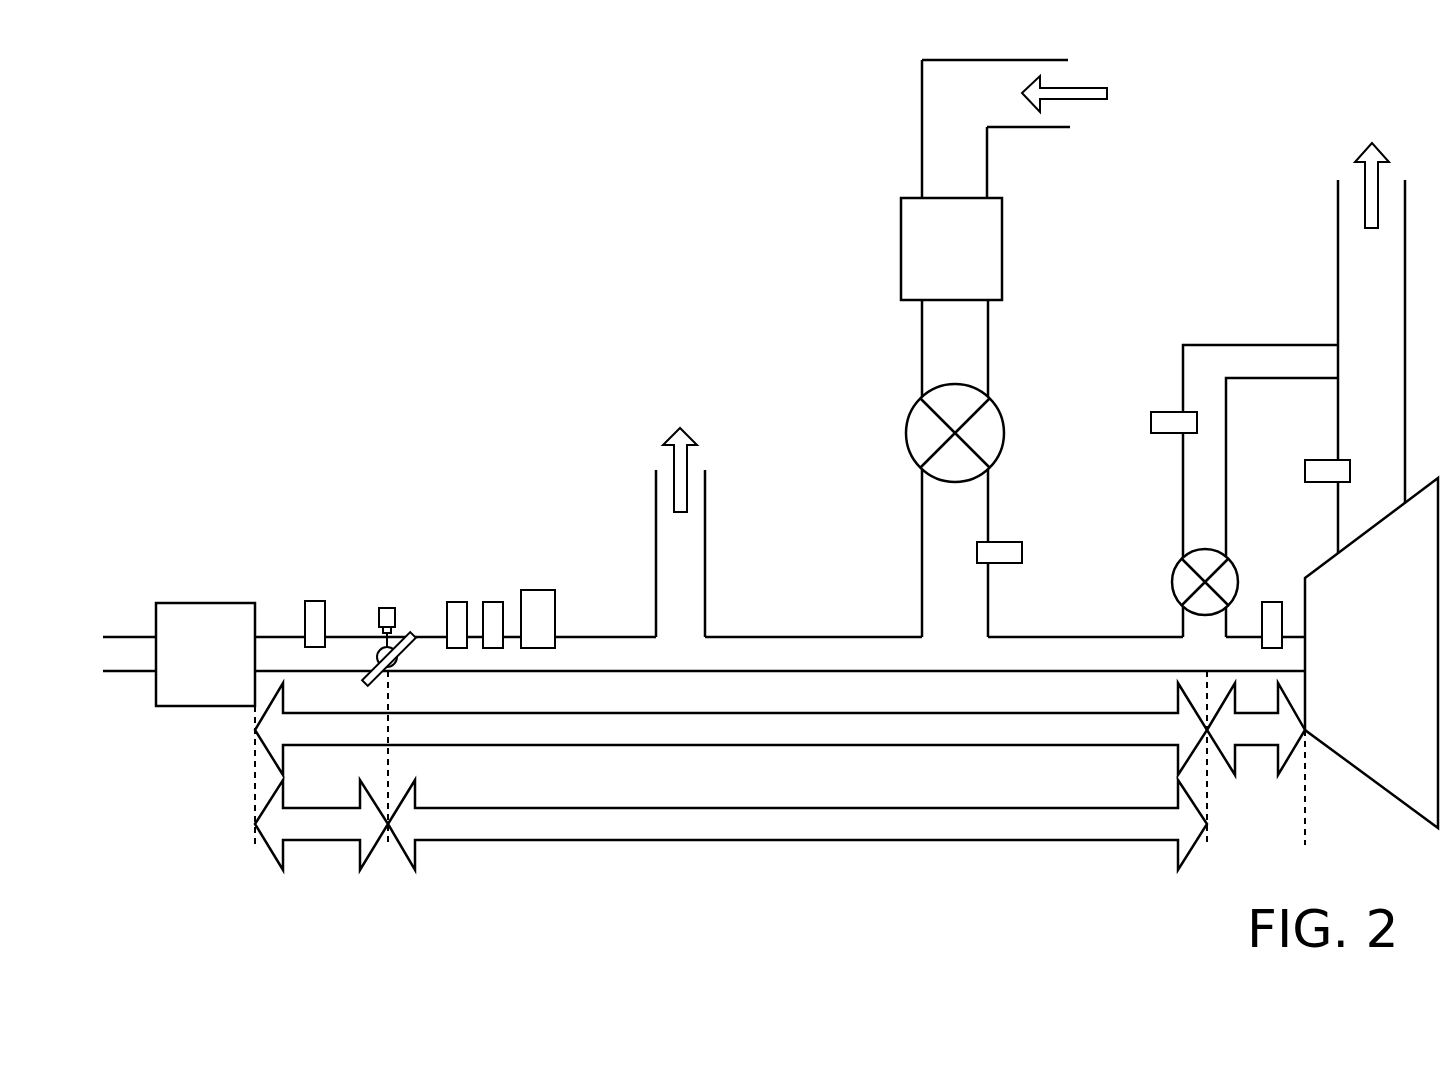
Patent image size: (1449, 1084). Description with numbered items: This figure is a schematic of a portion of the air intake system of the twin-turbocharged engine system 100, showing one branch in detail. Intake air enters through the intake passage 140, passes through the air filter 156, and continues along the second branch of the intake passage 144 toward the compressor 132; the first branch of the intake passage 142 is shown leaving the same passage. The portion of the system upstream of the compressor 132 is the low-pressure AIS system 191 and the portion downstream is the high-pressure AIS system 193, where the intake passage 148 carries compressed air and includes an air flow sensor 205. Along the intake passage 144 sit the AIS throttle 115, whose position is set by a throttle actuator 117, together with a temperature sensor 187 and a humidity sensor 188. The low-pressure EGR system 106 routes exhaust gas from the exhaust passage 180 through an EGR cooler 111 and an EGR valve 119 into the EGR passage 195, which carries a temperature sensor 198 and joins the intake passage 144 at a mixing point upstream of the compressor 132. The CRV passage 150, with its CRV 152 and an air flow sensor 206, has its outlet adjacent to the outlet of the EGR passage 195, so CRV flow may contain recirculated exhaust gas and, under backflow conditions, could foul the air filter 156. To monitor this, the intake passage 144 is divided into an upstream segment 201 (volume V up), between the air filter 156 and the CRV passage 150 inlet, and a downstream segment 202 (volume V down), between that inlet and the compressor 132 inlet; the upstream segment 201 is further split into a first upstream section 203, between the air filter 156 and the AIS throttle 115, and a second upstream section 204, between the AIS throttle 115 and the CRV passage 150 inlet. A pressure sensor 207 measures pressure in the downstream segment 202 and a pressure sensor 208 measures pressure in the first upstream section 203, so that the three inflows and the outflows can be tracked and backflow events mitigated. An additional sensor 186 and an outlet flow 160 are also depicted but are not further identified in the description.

The engine system 100 is at (484, 280).
The low-pressure EGR system 106 is at (790, 253).
The EGR cooler 111 is at (968, 262).
The AIS throttle 115 is at (422, 624).
The throttle actuator 117 is at (380, 608).
The EGR valve 119 is at (920, 410).
The compressor 132 is at (1389, 662).
The intake passage 140 is at (142, 666).
The first branch of intake passage 142 is at (680, 520).
The second branch of intake passage 144 is at (765, 667).
The intake passage 148 is at (1389, 384).
The CRV passage 150 is at (1224, 497).
The CRV 152 is at (1177, 575).
The air filter 156 is at (221, 666).
The exhaust outlet 160 is at (1372, 173).
The exhaust passage 180 is at (1090, 94).
The mass air flow sensor 186 is at (455, 602).
The temperature sensor 187 is at (497, 602).
The humidity sensor 188 is at (541, 590).
The low-pressure AIS system 191 is at (811, 530).
The high-pressure AIS system 193 is at (1310, 293).
The EGR passage 195 is at (972, 529).
The temperature sensor 198 is at (1010, 542).
The upstream segment 201 is at (720, 758).
The downstream segment 202 is at (1258, 783).
The first upstream section 203 is at (325, 865).
The second upstream section 204 is at (770, 856).
The air flow sensor 205 is at (1322, 460).
The air flow sensor 206 is at (1170, 412).
The pressure sensor 207 is at (1275, 602).
The pressure sensor 208 is at (313, 601).